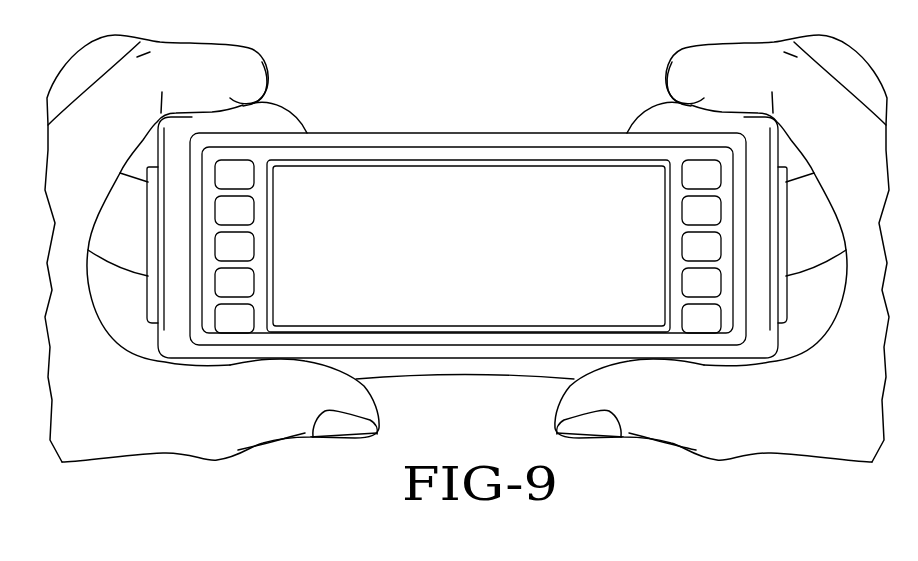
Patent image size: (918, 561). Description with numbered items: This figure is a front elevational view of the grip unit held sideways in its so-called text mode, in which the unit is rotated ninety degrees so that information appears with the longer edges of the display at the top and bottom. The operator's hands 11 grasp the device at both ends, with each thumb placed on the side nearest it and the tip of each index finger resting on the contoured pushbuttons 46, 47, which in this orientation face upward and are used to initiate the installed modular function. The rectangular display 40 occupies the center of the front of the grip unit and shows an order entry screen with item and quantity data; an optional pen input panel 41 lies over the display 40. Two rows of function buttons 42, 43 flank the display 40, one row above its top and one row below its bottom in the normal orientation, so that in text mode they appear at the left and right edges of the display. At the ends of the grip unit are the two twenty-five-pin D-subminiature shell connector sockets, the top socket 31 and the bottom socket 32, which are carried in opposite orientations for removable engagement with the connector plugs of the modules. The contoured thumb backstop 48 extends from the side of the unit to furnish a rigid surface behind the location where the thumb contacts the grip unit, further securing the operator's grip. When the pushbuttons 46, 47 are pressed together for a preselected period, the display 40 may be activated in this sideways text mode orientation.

The operator's hand 11 is at (361, 410).
The top socket 31 is at (784, 285).
The bottom socket 32 is at (152, 302).
The rectangular display 40 is at (431, 167).
The pen input panel 41 is at (474, 210).
The row of function buttons 42 is at (701, 162).
The row of function buttons 43 is at (236, 160).
The contoured pushbutton 46 is at (707, 107).
The contoured pushbutton 47 is at (231, 98).
The contoured thumb backstop 48 is at (576, 371).